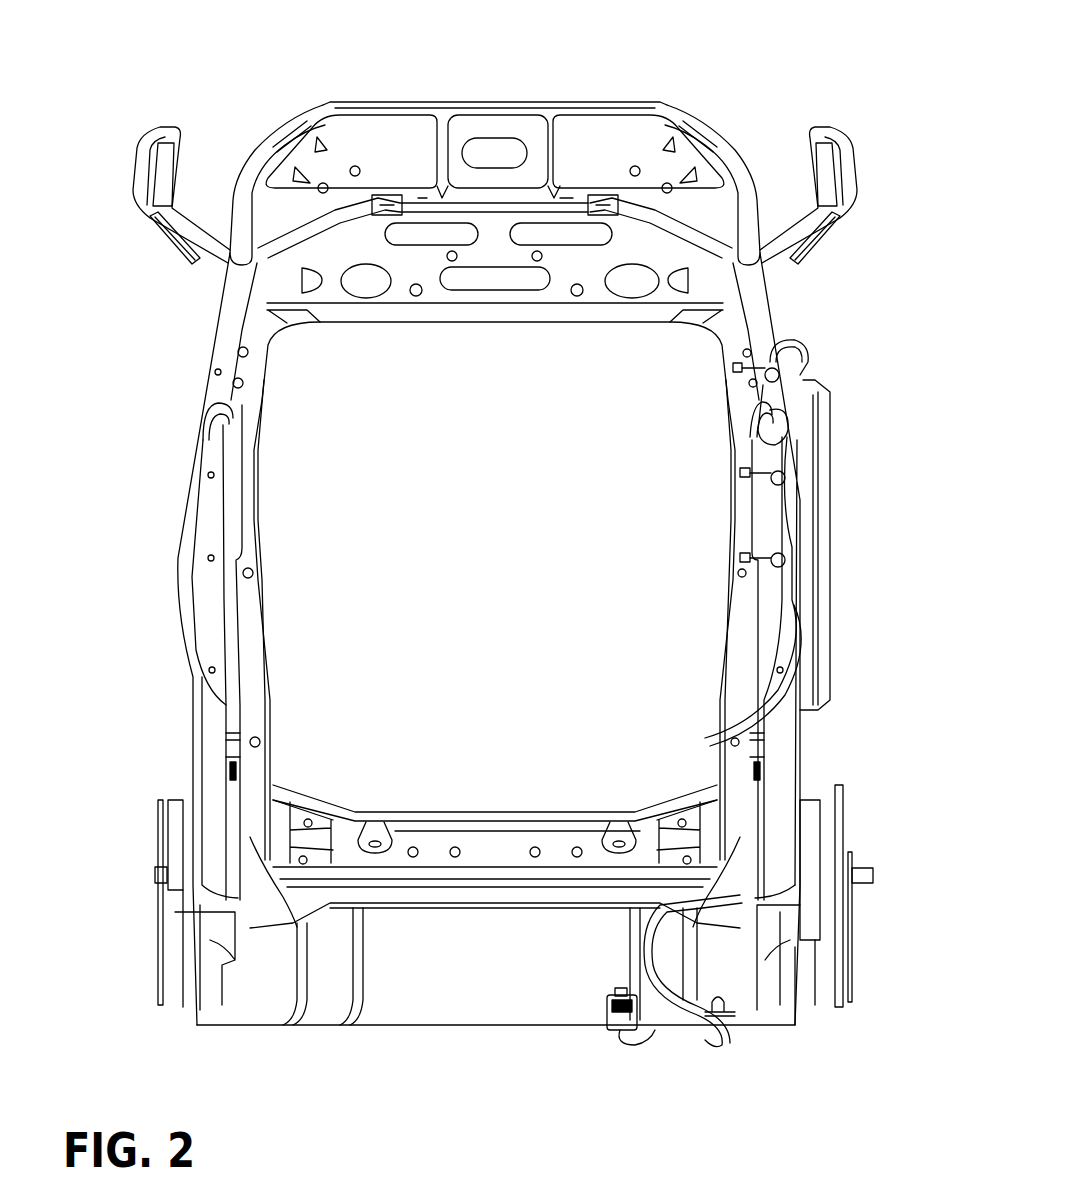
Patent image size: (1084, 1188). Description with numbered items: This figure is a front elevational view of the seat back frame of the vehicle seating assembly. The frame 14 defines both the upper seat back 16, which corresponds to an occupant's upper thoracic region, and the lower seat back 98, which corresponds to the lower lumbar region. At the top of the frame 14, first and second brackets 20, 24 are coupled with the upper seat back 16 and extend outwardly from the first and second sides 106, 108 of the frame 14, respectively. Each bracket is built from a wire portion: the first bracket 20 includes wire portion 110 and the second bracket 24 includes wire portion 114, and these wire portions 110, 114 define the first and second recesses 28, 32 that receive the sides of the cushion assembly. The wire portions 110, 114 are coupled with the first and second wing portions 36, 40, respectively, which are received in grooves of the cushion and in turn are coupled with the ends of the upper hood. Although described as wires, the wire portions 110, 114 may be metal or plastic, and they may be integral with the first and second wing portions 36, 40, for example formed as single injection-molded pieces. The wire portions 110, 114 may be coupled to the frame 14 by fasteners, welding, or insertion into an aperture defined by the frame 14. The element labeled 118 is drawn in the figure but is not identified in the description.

The frame 14 is at (158, 530).
The upper seat back 16 is at (859, 148).
The first bracket 20 is at (136, 155).
The second bracket 24 is at (834, 148).
The first recess 28 is at (210, 186).
The second recess 32 is at (795, 189).
The first wing portion 36 is at (134, 161).
The second wing portion 40 is at (858, 155).
The lower seat back 98 is at (872, 654).
The first side 106 is at (183, 324).
The second side 108 is at (825, 326).
The wire portion 110 is at (208, 255).
The wire portion 114 is at (773, 250).
The guide mounting lug 118 is at (160, 225).